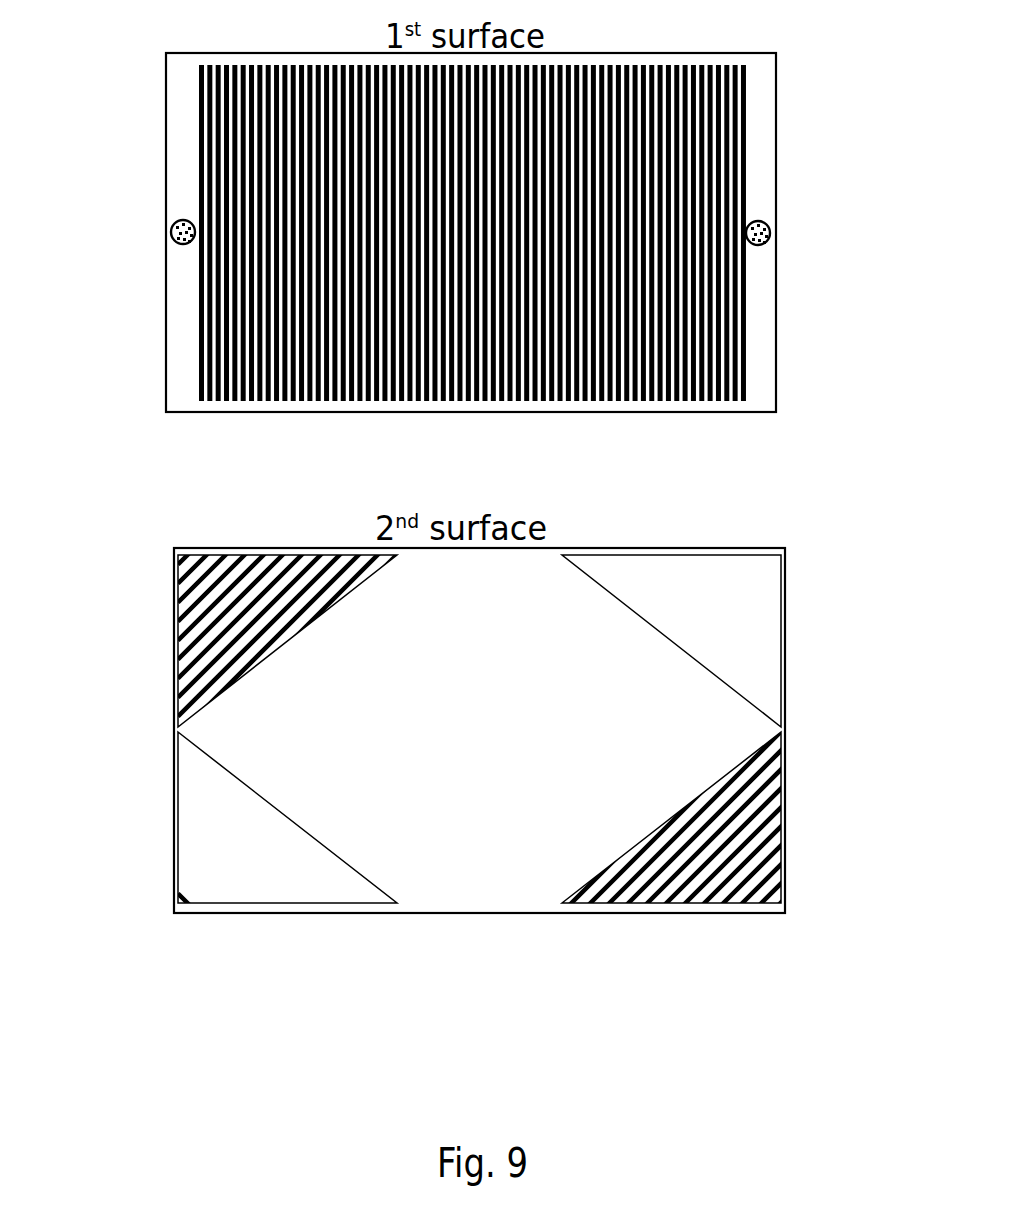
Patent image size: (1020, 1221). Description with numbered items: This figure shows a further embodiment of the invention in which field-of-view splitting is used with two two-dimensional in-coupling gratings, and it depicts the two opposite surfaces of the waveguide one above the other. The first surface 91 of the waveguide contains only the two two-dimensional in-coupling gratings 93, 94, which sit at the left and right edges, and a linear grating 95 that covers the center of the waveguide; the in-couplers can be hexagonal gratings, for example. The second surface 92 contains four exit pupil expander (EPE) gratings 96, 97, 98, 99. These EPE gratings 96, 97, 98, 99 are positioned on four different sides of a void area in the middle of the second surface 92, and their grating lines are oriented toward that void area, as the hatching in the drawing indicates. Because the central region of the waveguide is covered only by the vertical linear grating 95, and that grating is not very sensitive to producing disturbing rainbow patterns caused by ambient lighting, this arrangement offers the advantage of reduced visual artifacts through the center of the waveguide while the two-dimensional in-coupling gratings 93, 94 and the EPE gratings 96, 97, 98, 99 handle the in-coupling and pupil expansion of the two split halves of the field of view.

The first surface 91 is at (170, 413).
The second surface 92 is at (198, 915).
The 2D in-coupling grating 93 is at (170, 247).
The 2D in-coupling grating 94 is at (766, 245).
The linear grating 95 is at (692, 109).
The EPE grating 96 is at (192, 638).
The EPE grating 97 is at (190, 796).
The EPE grating 98 is at (770, 625).
The EPE grating 99 is at (770, 850).